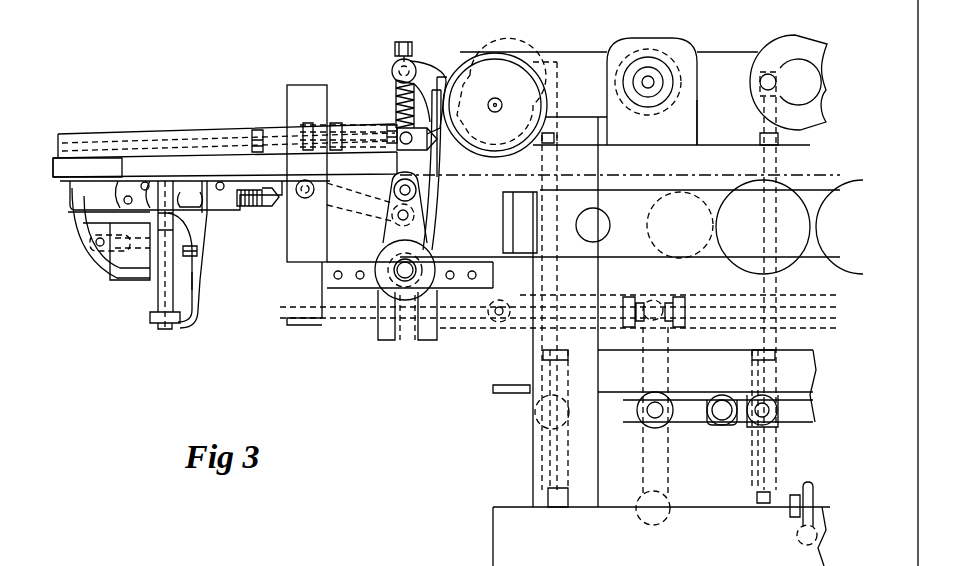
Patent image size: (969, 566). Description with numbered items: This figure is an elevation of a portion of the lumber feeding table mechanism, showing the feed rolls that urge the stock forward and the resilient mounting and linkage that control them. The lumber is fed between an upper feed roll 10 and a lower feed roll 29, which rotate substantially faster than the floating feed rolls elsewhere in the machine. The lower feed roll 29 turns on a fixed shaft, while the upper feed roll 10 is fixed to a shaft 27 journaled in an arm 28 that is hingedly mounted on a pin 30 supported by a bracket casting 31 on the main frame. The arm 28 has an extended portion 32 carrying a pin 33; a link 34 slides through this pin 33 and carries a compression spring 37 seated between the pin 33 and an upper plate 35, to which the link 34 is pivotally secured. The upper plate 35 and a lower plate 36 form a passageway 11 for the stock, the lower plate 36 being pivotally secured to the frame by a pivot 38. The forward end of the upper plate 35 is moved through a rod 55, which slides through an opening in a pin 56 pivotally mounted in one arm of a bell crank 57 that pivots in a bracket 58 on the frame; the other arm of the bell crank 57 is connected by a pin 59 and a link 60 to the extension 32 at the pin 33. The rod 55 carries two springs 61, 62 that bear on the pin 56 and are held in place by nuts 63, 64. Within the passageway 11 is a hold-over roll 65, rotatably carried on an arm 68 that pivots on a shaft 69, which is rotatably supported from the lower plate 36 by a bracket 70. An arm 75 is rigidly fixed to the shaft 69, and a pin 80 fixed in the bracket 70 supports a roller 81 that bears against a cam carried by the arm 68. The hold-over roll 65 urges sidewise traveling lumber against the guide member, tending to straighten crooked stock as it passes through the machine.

The upper feed roll 10 is at (515, 63).
The passageway 11 is at (245, 165).
The shaft 27 is at (500, 101).
The arm 28 is at (600, 68).
The lower feed roll 29 is at (538, 175).
The pin 30 is at (652, 80).
The bracket casting 31 is at (688, 128).
The extended portion 32 is at (447, 78).
The pin 33 is at (398, 66).
The link 34 is at (405, 43).
The upper plate 35 is at (207, 157).
The lower plate 36 is at (192, 177).
The compression spring 37 is at (393, 97).
The pivot 38 is at (392, 203).
The rod 55 is at (95, 147).
The pin 56 is at (322, 130).
The bell crank 57 is at (326, 167).
The bracket 58 is at (297, 225).
The pin 59 is at (409, 215).
The link 60 is at (438, 162).
The spring 61 is at (263, 143).
The spring 62 is at (360, 124).
The nut 63 is at (257, 130).
The nut 64 is at (390, 124).
The hold-over roll 65 is at (73, 168).
The arm 68 is at (85, 250).
The shaft 69 is at (158, 292).
The bracket 70 is at (195, 297).
The arm 75 is at (147, 245).
The pin 80 is at (193, 268).
The roller 81 is at (198, 281).